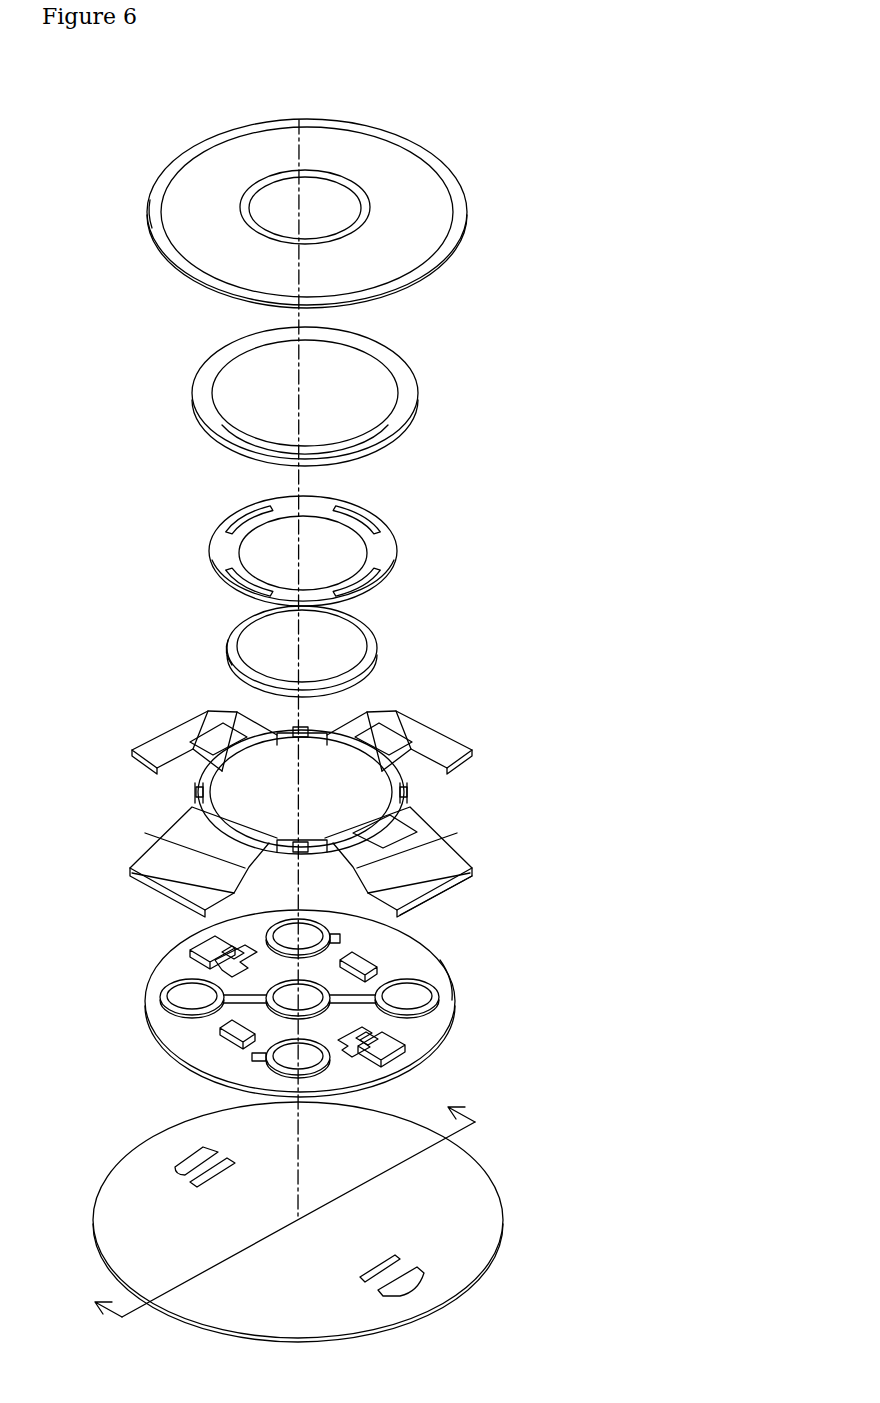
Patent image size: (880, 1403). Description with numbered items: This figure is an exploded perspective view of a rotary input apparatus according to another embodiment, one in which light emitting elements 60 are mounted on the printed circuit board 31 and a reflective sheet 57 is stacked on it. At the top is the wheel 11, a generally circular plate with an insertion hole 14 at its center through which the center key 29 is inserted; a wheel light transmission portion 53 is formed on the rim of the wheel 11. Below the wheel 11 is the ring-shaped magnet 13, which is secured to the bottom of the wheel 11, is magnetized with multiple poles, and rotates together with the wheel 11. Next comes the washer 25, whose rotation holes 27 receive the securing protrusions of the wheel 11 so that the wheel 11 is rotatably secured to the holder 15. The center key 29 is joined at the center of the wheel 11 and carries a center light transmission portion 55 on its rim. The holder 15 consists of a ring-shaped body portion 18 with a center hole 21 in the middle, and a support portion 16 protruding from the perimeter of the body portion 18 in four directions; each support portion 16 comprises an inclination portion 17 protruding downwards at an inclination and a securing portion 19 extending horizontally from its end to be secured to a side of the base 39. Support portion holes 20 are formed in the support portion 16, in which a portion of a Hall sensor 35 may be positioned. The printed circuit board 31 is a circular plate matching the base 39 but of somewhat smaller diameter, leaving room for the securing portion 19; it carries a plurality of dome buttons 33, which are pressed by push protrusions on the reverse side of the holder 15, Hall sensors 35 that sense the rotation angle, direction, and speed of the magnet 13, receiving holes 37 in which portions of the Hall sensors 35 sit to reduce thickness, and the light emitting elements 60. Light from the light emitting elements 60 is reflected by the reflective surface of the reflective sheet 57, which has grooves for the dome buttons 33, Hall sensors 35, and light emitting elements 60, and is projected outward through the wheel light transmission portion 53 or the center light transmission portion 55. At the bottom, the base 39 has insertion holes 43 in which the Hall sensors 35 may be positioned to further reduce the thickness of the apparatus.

The wheel 11 is at (360, 142).
The magnet 13 is at (432, 384).
The insertion hole 14 is at (298, 187).
The holder 15 is at (305, 784).
The support portion 16 is at (182, 826).
The inclination portion 17 is at (415, 859).
The body portion 18 is at (195, 788).
The securing portion 19 is at (462, 868).
The support portion hole 20 is at (395, 845).
The center hole 21 is at (312, 760).
The washer 25 is at (327, 548).
The rotation hole 27 is at (370, 520).
The center key 29 is at (365, 630).
The printed circuit board 31 is at (168, 1031).
The dome button 33 is at (172, 992).
The Hall sensor 35 is at (205, 945).
The receiving hole 37 is at (215, 958).
The base 39 is at (458, 1187).
The insertion hole 43 is at (177, 1168).
The wheel light transmission portion 53 is at (152, 208).
The center light transmission portion 55 is at (230, 652).
The reflective sheet 57 is at (437, 977).
The light emitting element 60 is at (363, 958).